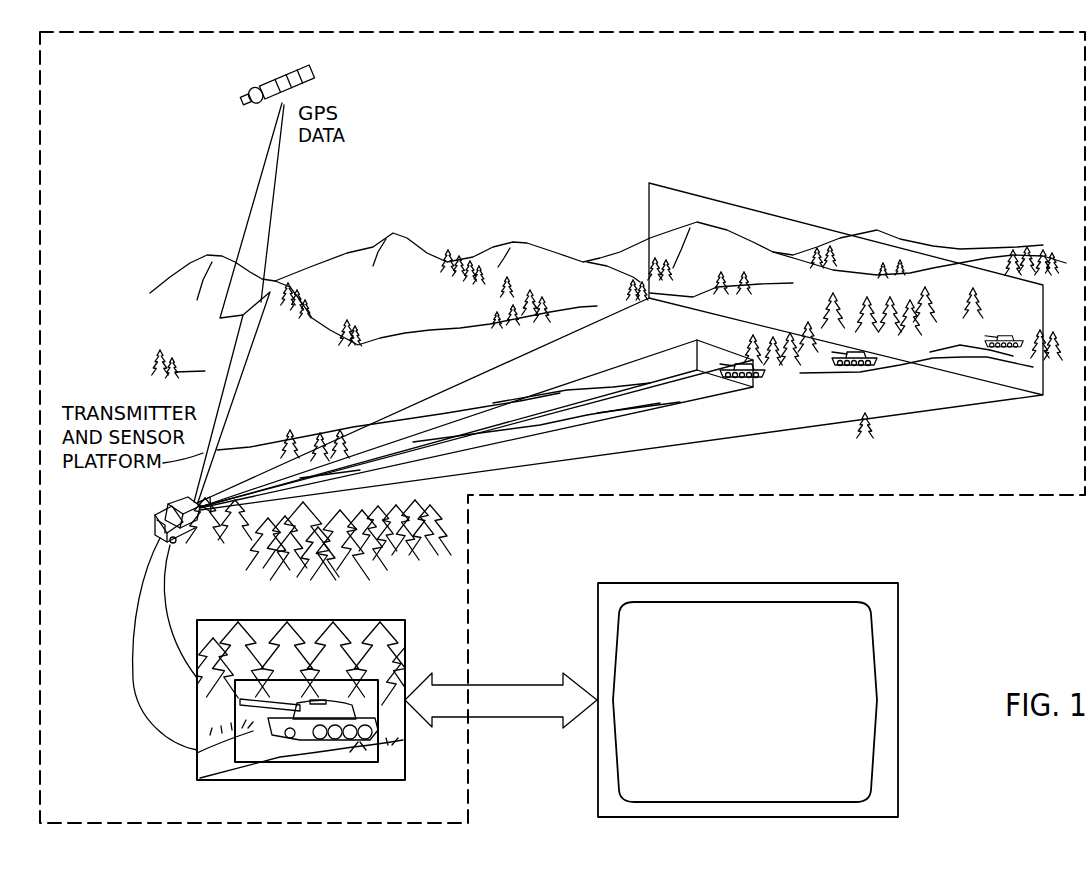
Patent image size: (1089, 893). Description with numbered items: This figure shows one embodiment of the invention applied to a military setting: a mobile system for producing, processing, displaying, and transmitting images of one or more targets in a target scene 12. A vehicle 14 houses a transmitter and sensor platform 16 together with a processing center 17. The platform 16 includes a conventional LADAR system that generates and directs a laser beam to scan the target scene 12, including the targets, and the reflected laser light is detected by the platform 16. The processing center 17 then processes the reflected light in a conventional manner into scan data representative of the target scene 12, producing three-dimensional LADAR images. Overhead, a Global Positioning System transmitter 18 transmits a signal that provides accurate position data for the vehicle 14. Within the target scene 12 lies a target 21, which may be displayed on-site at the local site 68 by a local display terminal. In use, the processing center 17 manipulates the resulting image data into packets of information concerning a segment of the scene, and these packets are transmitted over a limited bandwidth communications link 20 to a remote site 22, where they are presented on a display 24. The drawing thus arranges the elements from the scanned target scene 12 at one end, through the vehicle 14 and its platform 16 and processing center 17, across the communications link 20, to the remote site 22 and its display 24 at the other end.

The target scene 12 is at (983, 247).
The vehicle 14 is at (162, 547).
The transmitter and sensor platform 16 is at (173, 508).
The processing center 17 is at (182, 503).
The Global Positioning System (GPS) transmitter 18 is at (275, 81).
The limited bandwidth communications link 20 is at (485, 684).
The target 21 is at (860, 375).
The remote site 22 is at (748, 683).
The display 24 is at (821, 602).
The local site 68 is at (945, 496).